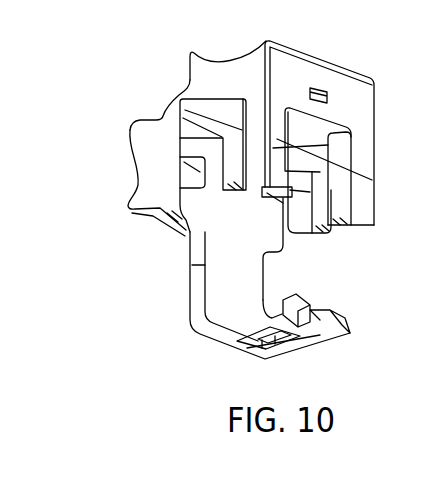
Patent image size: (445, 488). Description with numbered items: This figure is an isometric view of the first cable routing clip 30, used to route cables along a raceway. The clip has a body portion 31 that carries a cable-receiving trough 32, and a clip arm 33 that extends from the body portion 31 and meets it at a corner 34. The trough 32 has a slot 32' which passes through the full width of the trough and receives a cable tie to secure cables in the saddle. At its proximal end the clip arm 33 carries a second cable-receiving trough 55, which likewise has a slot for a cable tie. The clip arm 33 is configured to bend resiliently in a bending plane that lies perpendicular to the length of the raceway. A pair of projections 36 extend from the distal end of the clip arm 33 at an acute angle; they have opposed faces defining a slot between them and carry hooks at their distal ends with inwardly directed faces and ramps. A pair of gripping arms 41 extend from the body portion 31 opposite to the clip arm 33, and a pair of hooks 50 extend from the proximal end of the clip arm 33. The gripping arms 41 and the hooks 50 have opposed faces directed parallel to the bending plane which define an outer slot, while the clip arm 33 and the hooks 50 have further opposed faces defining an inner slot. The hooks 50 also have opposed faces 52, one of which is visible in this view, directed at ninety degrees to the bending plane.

The cable routing clip 30 is at (90, 141).
The body portion 31 is at (178, 76).
The cable-receiving trough 32 is at (291, 122).
The slot 32' is at (364, 108).
The clip arm 33 is at (188, 255).
The corner 34 is at (170, 102).
The projections 36 is at (290, 297).
The gripping arms 41 is at (362, 190).
The hooks 50 is at (221, 186).
The opposed faces 52 is at (317, 233).
The second cable-receiving trough 55 is at (137, 175).